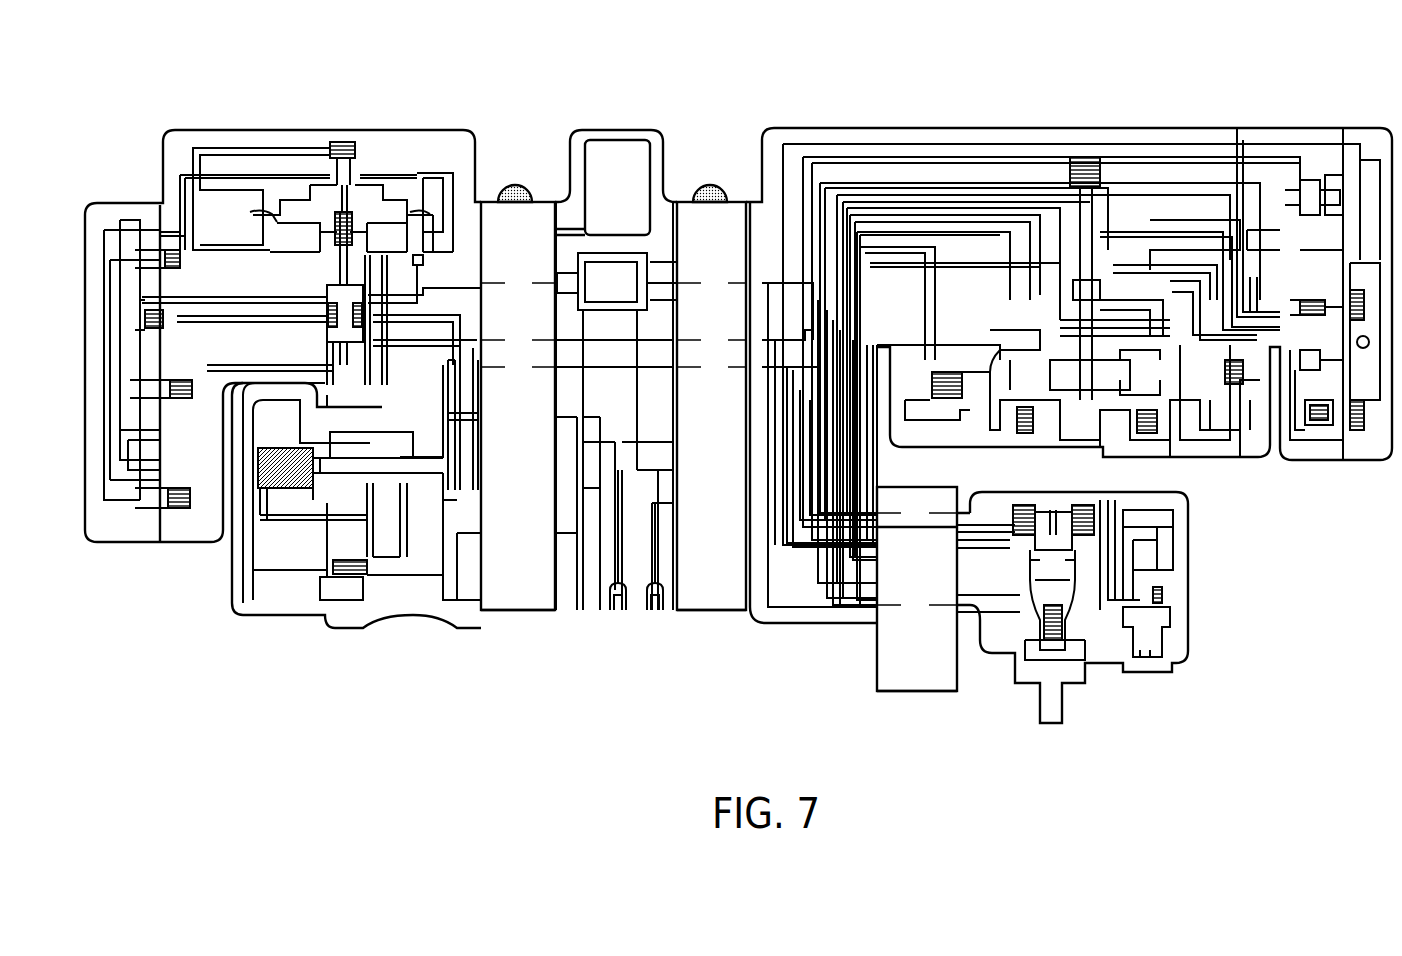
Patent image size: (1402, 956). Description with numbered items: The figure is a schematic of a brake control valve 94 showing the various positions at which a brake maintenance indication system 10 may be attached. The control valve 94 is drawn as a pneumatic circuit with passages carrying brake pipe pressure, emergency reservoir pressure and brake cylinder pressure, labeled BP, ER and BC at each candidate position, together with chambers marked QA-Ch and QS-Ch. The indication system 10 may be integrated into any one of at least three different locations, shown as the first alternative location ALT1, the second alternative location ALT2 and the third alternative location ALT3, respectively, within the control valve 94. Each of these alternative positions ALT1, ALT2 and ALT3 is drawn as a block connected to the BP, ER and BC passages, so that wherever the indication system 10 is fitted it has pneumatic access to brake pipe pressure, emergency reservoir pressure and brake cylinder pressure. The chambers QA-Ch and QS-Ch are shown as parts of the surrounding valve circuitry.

The control valve 94 is at (688, 86).
The indication system 10 is at (520, 611).
The Alt 1 ALT1 is at (518, 397).
The Alt 2 ALT2 is at (711, 397).
The Alt 3 ALT3 is at (917, 589).
The quick action chamber QA-Ch is at (616, 182).
The quick service chamber QS-Ch is at (1190, 234).